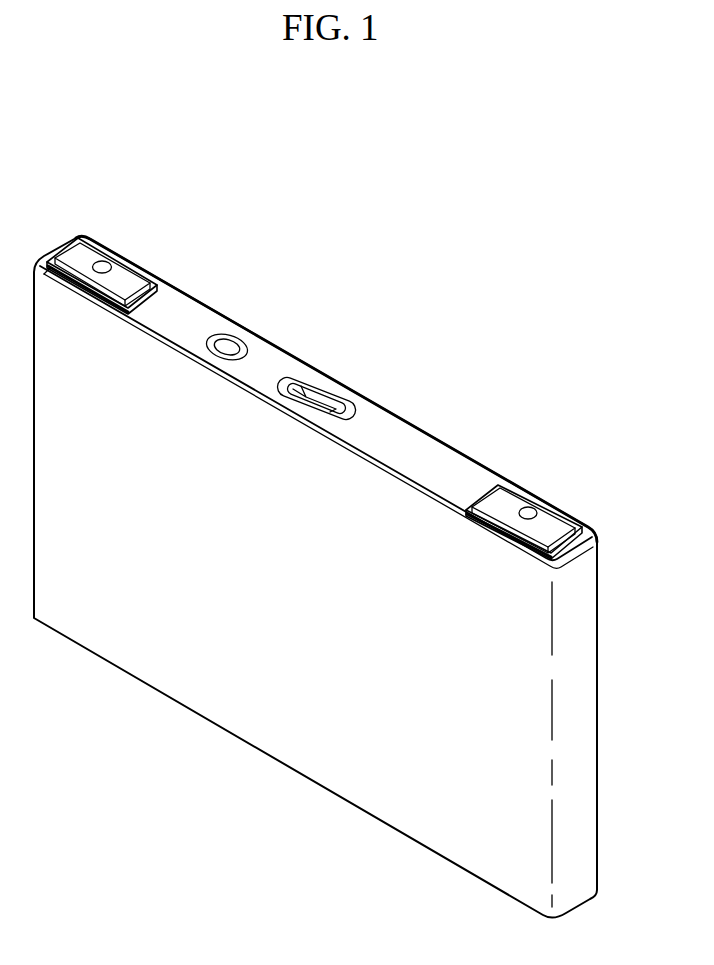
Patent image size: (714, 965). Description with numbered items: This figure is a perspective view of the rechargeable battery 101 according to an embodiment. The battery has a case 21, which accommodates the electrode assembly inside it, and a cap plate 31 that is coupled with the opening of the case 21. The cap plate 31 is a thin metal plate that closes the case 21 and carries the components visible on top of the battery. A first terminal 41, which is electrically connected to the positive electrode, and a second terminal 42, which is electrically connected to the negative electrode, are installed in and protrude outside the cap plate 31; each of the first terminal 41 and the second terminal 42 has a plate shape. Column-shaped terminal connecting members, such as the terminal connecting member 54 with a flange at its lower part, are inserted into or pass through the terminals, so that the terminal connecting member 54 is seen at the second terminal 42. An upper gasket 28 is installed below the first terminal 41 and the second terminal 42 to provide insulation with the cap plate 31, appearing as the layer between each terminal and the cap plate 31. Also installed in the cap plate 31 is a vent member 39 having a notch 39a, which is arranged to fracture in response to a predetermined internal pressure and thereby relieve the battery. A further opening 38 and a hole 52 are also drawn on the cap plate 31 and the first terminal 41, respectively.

The rechargeable battery 101 is at (411, 117).
The case 21 is at (268, 733).
The upper gasket 28 is at (153, 287).
The cap plate 31 is at (405, 442).
The vent hole 38 is at (230, 342).
The vent member 39 is at (333, 400).
The notch 39a is at (309, 398).
The first terminal 41 is at (123, 274).
The second terminal 42 is at (508, 495).
The first terminal hole 52 is at (100, 262).
The terminal connecting member 54 is at (532, 508).